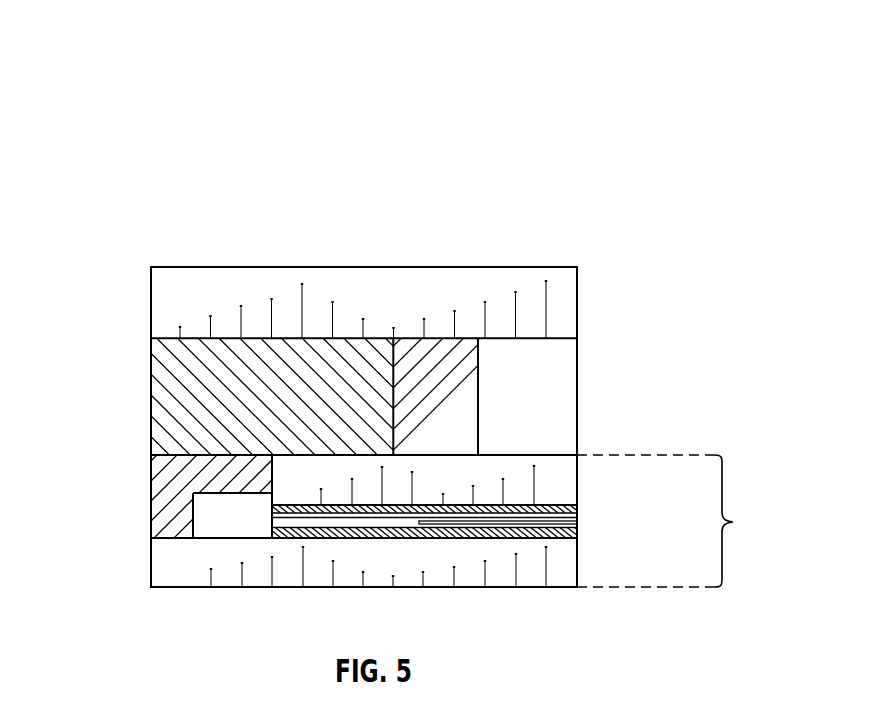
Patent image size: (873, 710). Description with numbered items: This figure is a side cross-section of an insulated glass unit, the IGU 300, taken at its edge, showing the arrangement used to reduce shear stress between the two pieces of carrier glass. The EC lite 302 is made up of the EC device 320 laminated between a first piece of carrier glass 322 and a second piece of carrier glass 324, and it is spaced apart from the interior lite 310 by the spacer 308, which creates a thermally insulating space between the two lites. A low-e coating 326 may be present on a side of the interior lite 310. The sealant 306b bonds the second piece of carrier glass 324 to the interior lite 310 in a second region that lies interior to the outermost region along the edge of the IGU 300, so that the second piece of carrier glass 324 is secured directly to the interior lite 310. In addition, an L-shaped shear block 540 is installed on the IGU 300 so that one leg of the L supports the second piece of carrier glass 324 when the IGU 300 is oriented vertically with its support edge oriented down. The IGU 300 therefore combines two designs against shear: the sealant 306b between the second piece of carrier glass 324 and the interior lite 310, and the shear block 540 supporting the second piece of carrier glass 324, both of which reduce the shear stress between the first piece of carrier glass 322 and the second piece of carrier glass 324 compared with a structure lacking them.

The IGU 300 is at (102, 49).
The EC lite 302 is at (733, 522).
The sealant 306b is at (326, 384).
The spacer 308 is at (470, 421).
The interior lite 310 is at (552, 288).
The EC device 320 is at (592, 505).
The first piece of carrier glass 322 is at (188, 567).
The second piece of carrier glass 324 is at (564, 472).
The low-e coating 326 is at (553, 338).
The L-shaped shear block 540 is at (150, 498).